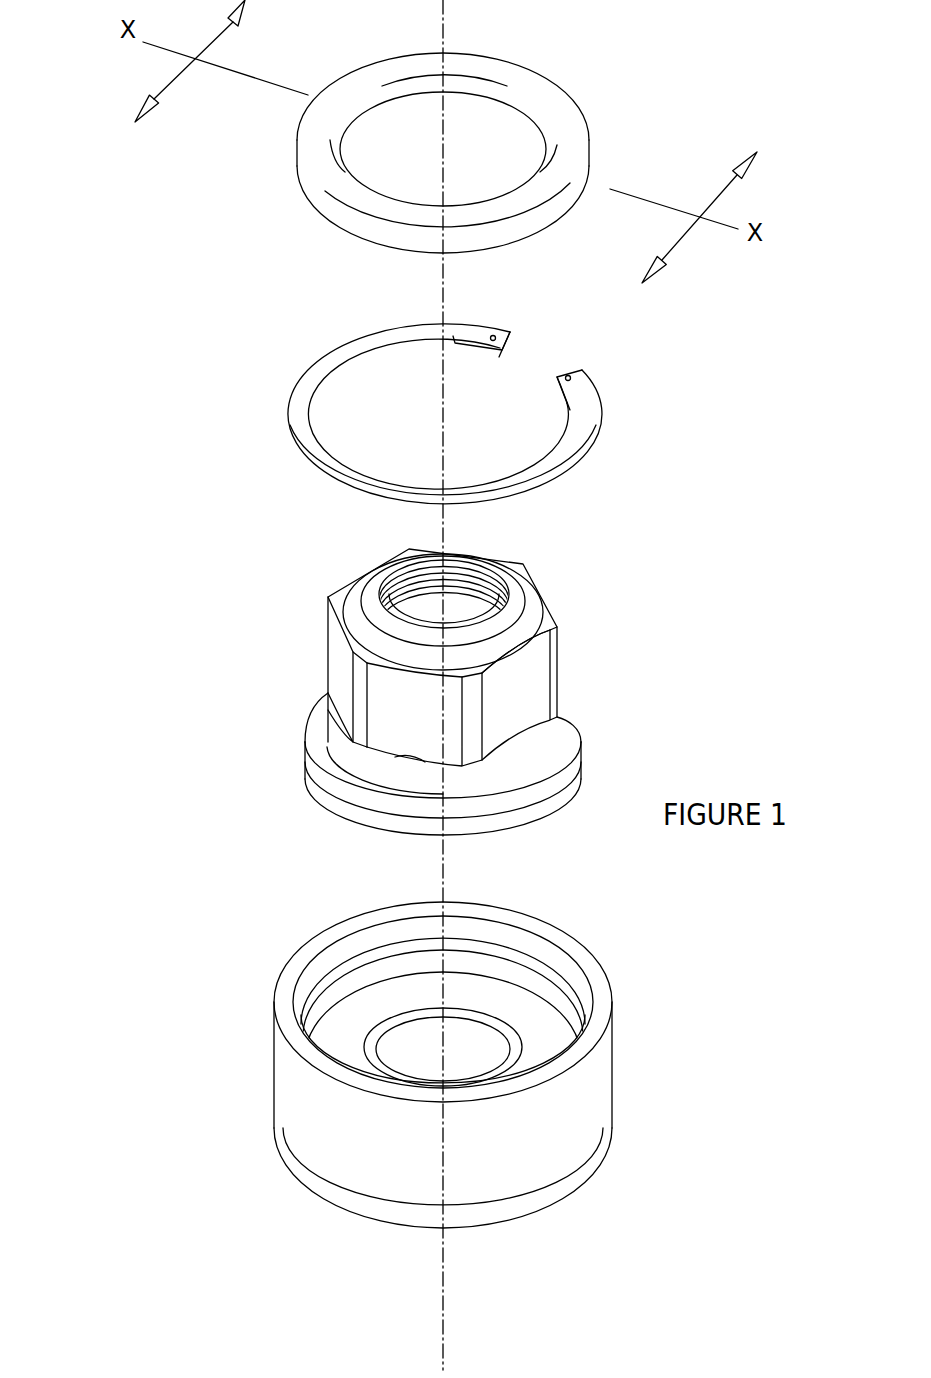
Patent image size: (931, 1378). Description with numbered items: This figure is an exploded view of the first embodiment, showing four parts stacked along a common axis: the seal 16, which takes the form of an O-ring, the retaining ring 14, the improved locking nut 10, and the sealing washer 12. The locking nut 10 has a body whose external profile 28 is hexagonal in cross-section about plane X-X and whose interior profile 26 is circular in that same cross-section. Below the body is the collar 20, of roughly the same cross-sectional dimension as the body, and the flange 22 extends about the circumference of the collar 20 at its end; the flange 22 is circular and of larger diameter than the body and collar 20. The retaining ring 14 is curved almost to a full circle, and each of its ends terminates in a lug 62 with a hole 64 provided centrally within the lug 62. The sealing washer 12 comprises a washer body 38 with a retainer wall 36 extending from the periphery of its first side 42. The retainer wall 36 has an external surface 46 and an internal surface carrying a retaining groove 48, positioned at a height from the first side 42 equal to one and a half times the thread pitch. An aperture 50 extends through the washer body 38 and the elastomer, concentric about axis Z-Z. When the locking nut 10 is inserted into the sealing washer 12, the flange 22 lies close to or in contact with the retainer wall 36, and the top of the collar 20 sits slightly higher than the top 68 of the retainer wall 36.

The locking nut 10 is at (433, 702).
The sealing washer 12 is at (456, 1055).
The retaining ring 14 is at (419, 390).
The seal 16 is at (343, 196).
The collar 20 is at (523, 761).
The flange 22 is at (567, 716).
The interior profile 26 is at (414, 574).
The external profile 28 is at (533, 672).
The retainer wall 36 is at (598, 1006).
The washer body 38 is at (557, 1154).
The first side 42 is at (343, 1044).
The external surface 46 is at (285, 1068).
The retaining groove 48 is at (338, 968).
The aperture 50 is at (443, 1047).
The lug 62 is at (478, 332).
The hole 64 is at (494, 336).
The top of the retainer wall 68 is at (404, 757).